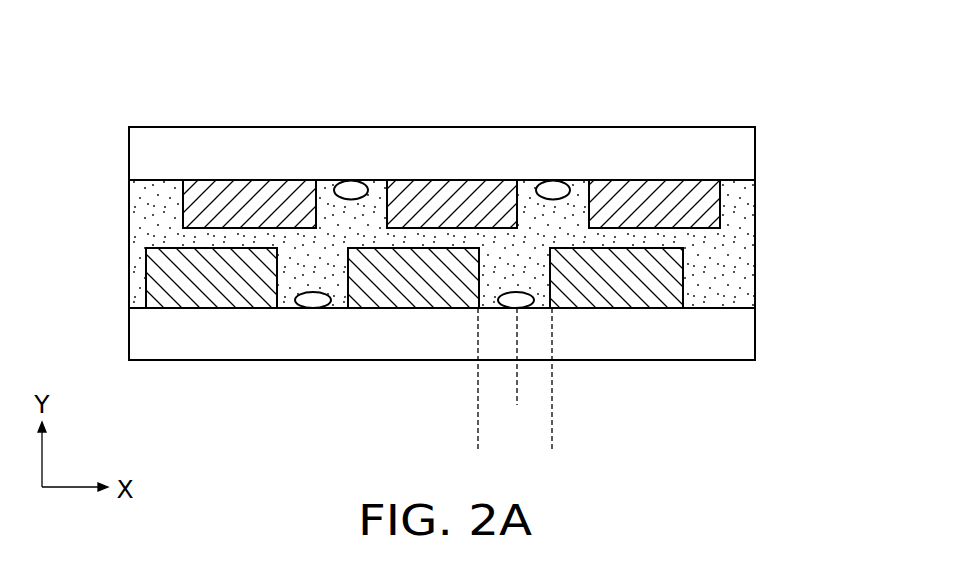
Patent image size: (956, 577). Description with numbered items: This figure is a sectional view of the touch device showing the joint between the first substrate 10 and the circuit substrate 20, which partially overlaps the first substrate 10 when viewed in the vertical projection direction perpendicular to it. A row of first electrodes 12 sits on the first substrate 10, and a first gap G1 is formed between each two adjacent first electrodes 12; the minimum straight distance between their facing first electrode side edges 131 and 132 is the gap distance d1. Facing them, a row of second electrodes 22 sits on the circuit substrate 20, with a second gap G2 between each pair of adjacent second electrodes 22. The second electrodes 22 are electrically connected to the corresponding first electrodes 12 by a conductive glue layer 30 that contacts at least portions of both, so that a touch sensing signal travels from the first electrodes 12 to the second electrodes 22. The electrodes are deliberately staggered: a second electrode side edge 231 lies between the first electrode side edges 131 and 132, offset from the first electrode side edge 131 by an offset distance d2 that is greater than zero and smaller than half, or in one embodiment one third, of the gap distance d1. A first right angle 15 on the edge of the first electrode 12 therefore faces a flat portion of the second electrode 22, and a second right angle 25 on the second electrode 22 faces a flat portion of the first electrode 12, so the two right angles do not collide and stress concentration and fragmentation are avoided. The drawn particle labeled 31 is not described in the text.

The first substrate 10 is at (747, 335).
The circuit substrate 20 is at (747, 153).
The first electrode 12 is at (210, 296).
The first right angle 15 is at (346, 250).
The first electrode side edge 131 is at (477, 270).
The first electrode side edge 132 is at (553, 272).
The second electrode 22 is at (247, 196).
The second electrode side edge 231 is at (518, 212).
The second right angle 25 is at (369, 224).
The conductive glue layer 30 is at (573, 213).
The particle 31 is at (553, 188).
The first gap G1 is at (304, 272).
The second gap G2 is at (345, 215).
The gap distance d1 is at (552, 445).
The offset distance d2 is at (563, 400).